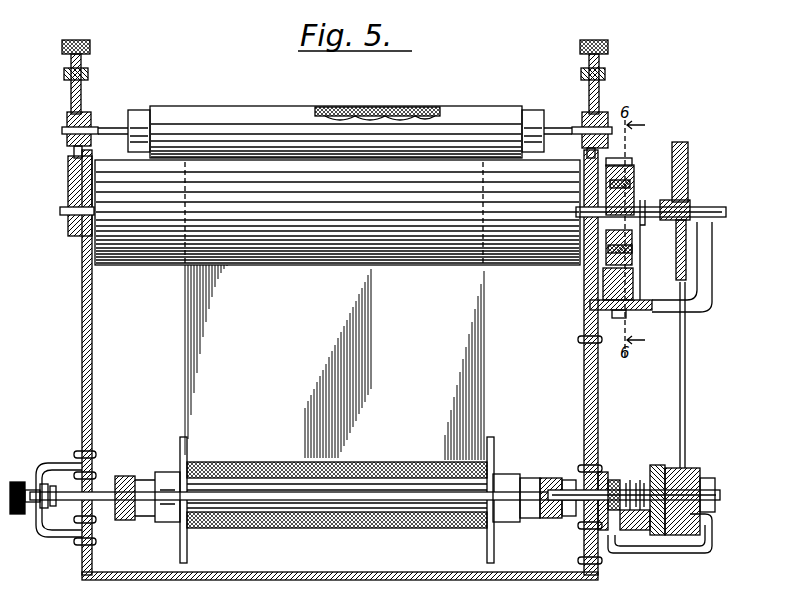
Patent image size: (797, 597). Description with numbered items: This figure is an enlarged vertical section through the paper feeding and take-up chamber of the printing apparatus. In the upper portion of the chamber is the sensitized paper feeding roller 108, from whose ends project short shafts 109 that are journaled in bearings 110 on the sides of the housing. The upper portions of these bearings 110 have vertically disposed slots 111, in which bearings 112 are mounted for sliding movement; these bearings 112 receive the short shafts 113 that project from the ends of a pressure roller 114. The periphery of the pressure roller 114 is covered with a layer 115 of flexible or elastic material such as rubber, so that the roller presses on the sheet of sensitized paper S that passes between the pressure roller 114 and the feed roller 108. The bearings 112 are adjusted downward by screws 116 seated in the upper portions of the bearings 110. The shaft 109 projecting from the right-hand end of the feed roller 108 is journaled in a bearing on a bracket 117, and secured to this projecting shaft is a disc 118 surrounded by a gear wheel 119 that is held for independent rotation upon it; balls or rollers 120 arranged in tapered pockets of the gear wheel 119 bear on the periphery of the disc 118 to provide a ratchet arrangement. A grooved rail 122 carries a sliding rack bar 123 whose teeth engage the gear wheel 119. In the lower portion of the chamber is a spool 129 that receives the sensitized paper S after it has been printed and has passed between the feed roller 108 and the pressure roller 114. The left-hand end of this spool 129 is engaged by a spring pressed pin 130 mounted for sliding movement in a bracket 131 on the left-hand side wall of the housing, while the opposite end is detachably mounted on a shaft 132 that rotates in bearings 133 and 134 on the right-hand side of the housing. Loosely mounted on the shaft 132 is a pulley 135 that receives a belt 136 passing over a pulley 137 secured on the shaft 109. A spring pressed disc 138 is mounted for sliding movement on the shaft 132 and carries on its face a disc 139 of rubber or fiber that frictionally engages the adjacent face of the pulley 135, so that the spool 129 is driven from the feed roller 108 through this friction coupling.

The sensitized paper feeding roller 108 is at (350, 232).
The short shafts 109 is at (62, 214).
The bearings 110 is at (70, 200).
The vertically disposed slots 111 is at (74, 153).
The bearings 112 is at (88, 114).
The short shafts 113 is at (112, 128).
The pressure roller 114 is at (532, 112).
The layer of flexible or elastic material 115 is at (400, 107).
The screws 116 is at (82, 32).
The bracket 117 is at (712, 280).
The disc 118 is at (626, 200).
The gear wheel 119 is at (624, 163).
The balls or rollers 120 is at (628, 184).
The grooved rail 122 is at (604, 288).
The rack bar 123 is at (630, 280).
The spool 129 is at (214, 485).
The spring pressed pin 130 is at (102, 492).
The bracket 131 is at (68, 463).
The shaft 132 is at (722, 495).
The bearing 133 is at (668, 553).
The bearing 134 is at (604, 472).
The pulley 135 is at (698, 470).
The belt 136 is at (686, 385).
The pulley 137 is at (690, 166).
The spring pressed disc 138 is at (657, 466).
The disc of rubber or fiber 139 is at (648, 530).
The sensitized paper S is at (488, 390).